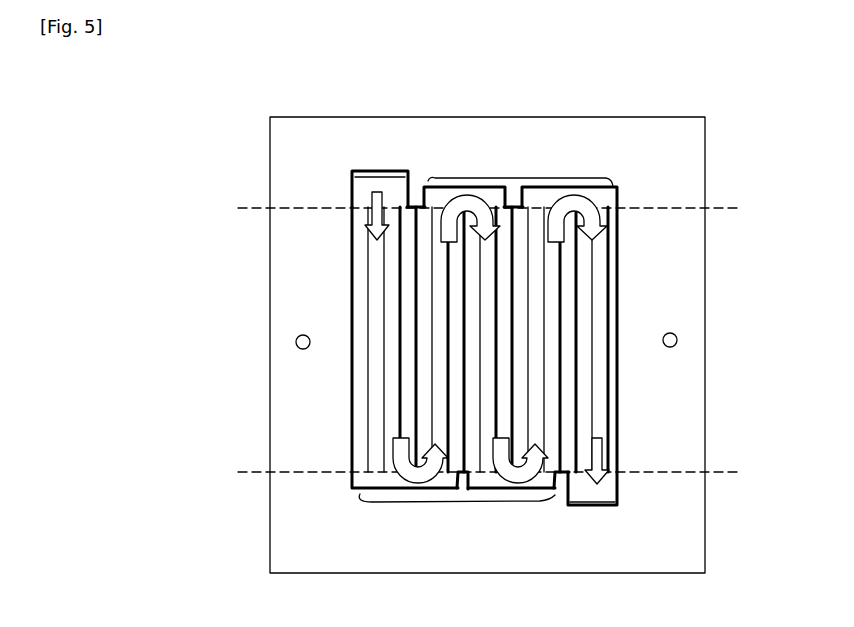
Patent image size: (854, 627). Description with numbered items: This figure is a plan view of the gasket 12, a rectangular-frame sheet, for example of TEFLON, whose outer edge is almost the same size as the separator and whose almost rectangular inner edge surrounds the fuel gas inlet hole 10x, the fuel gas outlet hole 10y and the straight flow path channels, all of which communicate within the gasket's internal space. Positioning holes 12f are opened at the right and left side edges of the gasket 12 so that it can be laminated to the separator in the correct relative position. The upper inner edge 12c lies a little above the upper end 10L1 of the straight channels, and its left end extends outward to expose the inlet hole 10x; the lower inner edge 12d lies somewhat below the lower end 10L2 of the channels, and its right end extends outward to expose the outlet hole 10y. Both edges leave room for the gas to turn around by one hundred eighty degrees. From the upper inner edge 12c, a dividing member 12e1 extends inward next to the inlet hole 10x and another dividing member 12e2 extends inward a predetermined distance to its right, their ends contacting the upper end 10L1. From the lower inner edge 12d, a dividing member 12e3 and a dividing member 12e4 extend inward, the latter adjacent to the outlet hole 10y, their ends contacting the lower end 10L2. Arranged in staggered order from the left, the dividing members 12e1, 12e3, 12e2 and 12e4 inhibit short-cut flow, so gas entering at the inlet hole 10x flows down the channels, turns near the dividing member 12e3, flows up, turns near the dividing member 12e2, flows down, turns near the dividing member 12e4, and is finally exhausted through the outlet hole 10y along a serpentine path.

The gasket 12 is at (583, 586).
The fuel gas inlet hole 10x is at (378, 171).
The dividing member 12e1 is at (416, 206).
The upper inner edge 12c is at (514, 180).
The dividing member 12e2 is at (512, 206).
The dividing member 12e3 is at (462, 490).
The dividing member 12e4 is at (558, 490).
The fuel gas outlet hole 10y is at (617, 505).
The lower inner edge 12d is at (460, 503).
The upper end of the straight flow path channels 10L1 is at (262, 208).
The lower end of the straight flow path channels 10L2 is at (262, 472).
The positioning holes 12f is at (296, 344).